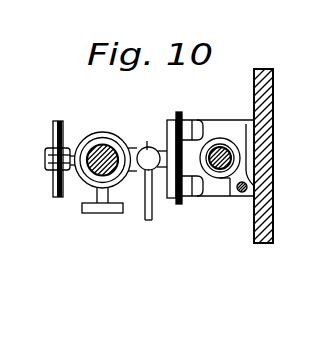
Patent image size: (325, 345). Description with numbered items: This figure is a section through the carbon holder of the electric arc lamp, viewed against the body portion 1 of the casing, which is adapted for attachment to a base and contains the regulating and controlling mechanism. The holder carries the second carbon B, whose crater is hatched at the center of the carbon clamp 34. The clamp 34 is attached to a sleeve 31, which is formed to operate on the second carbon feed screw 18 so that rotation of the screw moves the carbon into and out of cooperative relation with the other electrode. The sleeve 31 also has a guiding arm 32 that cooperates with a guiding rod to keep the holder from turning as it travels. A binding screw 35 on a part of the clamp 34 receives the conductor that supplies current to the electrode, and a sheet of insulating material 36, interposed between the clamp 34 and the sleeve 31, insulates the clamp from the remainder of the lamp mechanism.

The body portion 1 is at (261, 221).
The second carbon B is at (102, 157).
The carbon clamp 34 is at (96, 137).
The binding screw 35 is at (146, 149).
The sheet of insulating material 36 is at (178, 203).
The sleeve 31 is at (217, 143).
The second carbon feed screw 18 is at (220, 162).
The guiding arm 32 is at (236, 191).